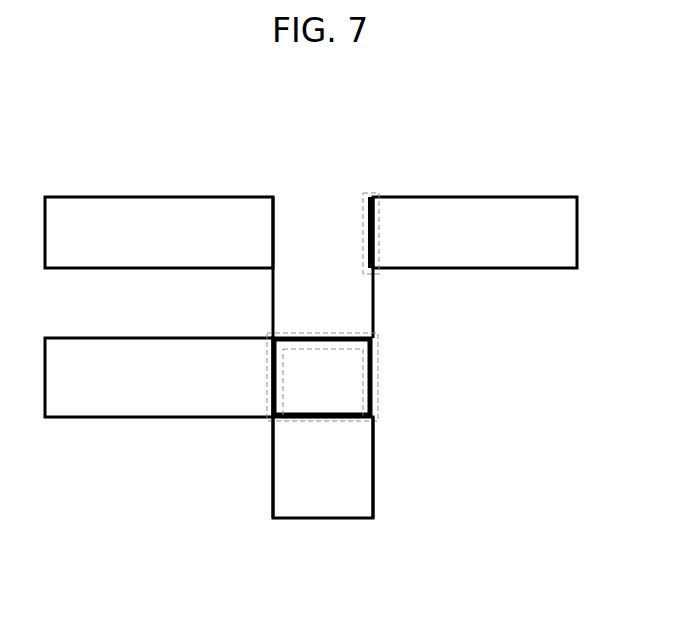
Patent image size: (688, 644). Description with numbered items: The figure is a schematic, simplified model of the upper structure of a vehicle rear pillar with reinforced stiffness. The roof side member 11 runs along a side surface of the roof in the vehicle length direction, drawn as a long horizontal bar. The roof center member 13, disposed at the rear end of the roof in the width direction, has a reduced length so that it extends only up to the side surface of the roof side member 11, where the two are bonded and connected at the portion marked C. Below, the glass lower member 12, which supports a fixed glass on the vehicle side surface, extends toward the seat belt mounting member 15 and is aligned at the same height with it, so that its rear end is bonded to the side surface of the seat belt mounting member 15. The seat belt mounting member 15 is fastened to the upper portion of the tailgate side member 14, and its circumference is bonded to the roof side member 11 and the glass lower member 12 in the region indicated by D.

The roof side member 11 is at (148, 208).
The glass lower member 12 is at (153, 402).
The roof center member 13 is at (545, 208).
The tailgate side member 14 is at (328, 497).
The seat belt mounting member 15 is at (342, 397).
The bonded portion between roof side member and roof center member C is at (380, 191).
The bonded circumference of seat belt mounting member D is at (378, 382).